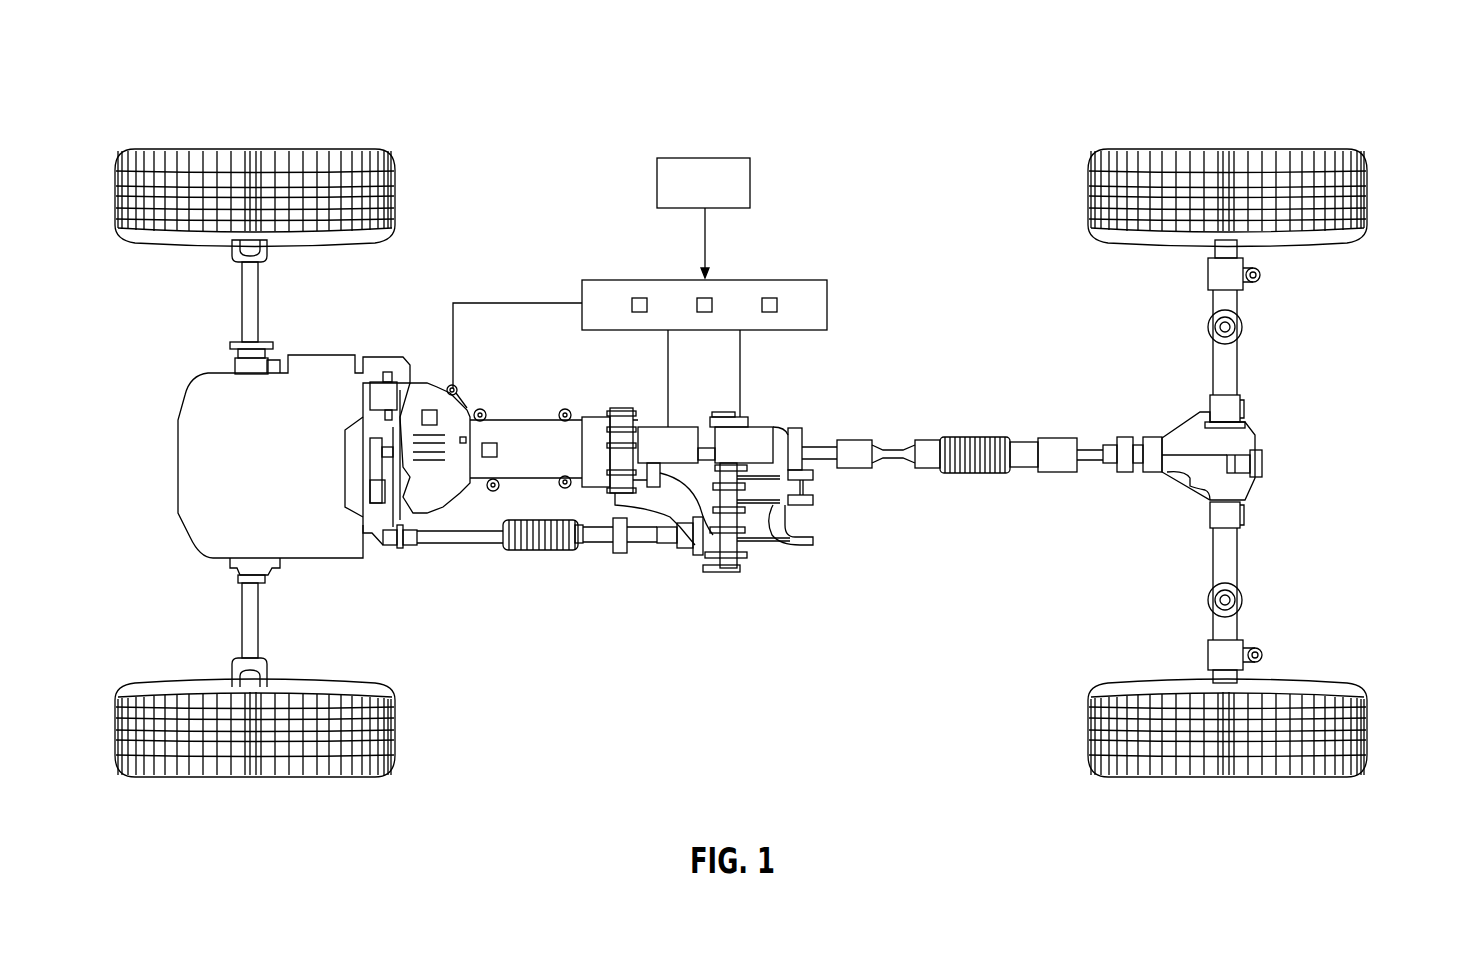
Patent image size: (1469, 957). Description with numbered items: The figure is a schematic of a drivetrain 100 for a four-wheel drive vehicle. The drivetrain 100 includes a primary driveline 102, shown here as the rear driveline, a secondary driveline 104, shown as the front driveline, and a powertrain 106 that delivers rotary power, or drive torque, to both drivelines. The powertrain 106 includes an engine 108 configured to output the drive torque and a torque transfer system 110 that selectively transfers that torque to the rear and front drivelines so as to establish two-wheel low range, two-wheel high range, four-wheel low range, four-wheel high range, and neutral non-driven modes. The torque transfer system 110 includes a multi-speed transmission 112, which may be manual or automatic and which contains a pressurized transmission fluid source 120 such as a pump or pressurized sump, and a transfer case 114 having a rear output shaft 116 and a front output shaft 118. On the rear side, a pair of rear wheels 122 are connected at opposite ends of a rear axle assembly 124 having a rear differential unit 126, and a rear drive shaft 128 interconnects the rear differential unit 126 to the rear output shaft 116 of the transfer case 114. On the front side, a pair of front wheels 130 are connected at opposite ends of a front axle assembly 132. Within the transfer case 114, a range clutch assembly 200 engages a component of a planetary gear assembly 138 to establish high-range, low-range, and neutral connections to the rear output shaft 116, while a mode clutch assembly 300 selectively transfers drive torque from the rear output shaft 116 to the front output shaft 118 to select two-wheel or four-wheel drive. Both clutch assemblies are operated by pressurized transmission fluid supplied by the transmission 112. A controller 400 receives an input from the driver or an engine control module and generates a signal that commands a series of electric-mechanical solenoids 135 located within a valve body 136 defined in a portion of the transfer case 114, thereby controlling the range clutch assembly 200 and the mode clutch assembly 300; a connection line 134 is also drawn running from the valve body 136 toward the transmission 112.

The drivetrain 100 is at (945, 85).
The primary driveline 102 is at (1330, 328).
The secondary driveline 104 is at (205, 628).
The powertrain 106 is at (572, 672).
The engine 108 is at (335, 405).
The torque transfer system 110 is at (632, 584).
The multi-speed transmission 112 is at (517, 455).
The transfer case 114 is at (753, 530).
The rear output shaft 116 is at (815, 445).
The front output shaft 118 is at (668, 538).
The pressurized transmission fluid source 120 is at (490, 438).
The rear wheels 122 is at (1370, 195).
The rear axle assembly 124 is at (1270, 510).
The rear differential unit 126 is at (1255, 445).
The rear drive shaft 128 is at (982, 455).
The front wheels 130 is at (398, 192).
The front axle assembly 132 is at (258, 318).
The communication line 134 is at (500, 303).
The electric-mechanical solenoids 135 is at (770, 300).
The valve body 136 is at (808, 314).
The planetary gear assembly 138 is at (660, 448).
The range clutch assembly 200 is at (682, 448).
The mode clutch assembly 300 is at (748, 448).
The controller 400 is at (697, 175).